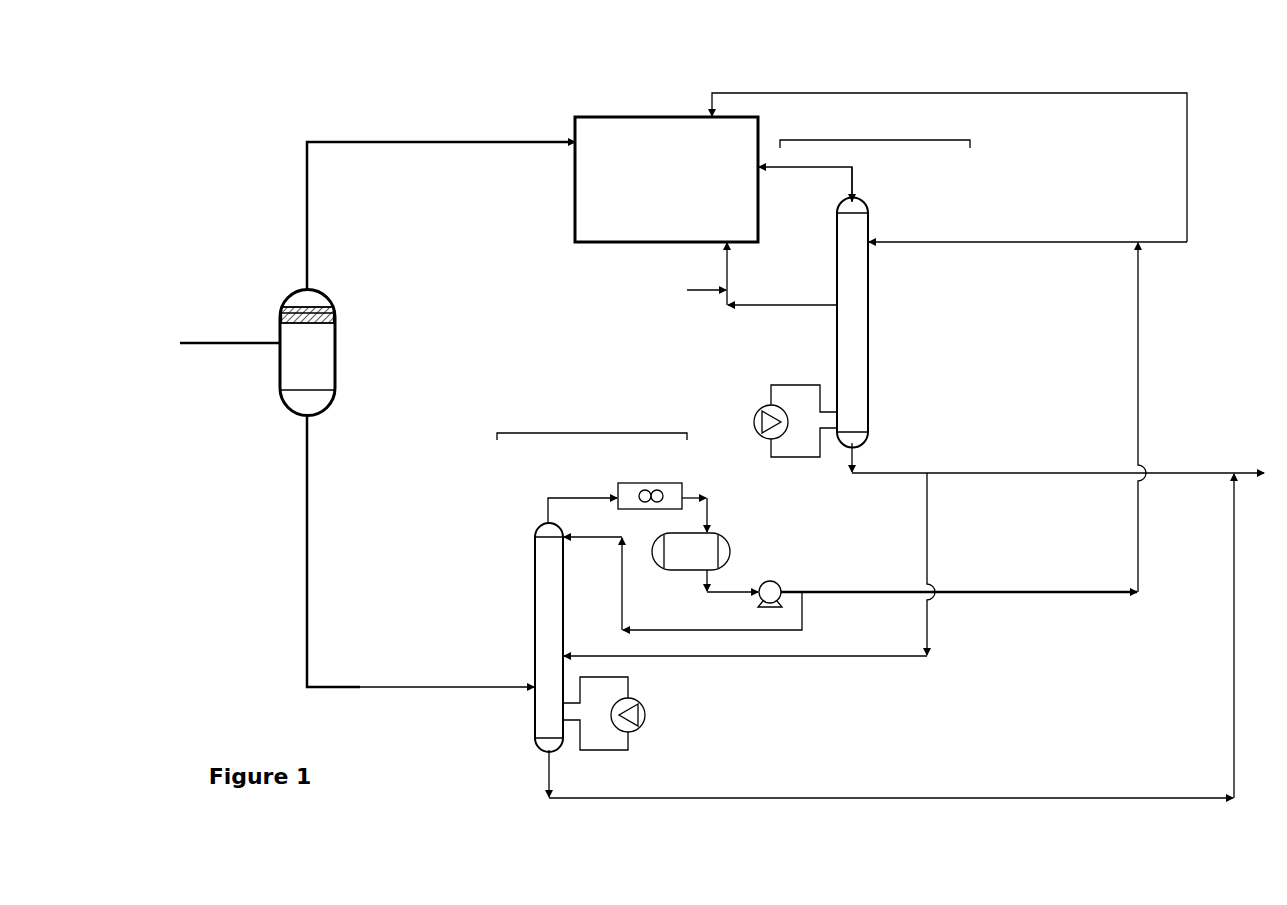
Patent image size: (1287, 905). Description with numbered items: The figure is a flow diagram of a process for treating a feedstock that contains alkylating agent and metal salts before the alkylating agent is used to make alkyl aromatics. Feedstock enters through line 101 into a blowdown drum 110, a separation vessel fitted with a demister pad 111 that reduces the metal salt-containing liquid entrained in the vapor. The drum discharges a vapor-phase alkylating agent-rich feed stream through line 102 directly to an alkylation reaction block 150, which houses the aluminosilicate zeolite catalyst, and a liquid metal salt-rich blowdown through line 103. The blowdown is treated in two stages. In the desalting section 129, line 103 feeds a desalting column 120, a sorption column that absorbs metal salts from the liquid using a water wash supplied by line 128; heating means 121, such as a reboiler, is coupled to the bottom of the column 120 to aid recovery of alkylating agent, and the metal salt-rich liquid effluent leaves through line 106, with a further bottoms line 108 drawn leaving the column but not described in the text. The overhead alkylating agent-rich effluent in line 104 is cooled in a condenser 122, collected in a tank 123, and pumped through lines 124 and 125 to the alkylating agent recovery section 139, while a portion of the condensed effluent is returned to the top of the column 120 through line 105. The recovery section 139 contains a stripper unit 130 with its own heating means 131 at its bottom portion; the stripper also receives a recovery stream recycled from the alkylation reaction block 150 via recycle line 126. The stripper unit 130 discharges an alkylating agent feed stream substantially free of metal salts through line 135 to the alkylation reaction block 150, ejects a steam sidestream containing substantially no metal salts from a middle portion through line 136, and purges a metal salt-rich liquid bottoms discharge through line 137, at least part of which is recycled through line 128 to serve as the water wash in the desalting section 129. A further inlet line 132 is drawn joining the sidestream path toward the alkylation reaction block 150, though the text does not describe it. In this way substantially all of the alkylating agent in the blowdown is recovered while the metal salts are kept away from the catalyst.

The feedstock line 101 is at (230, 333).
The alkylating agent-rich feed stream line 102 is at (441, 216).
The blowdown line 103 is at (420, 551).
The alkylating agent-rich effluent line 104 is at (582, 502).
The recycle line 105 is at (683, 583).
The metal salt-rich liquid effluent line 106 is at (1247, 636).
The bottoms stream 108 is at (891, 774).
The blowdown drum 110 is at (336, 294).
The demister pad 111 is at (282, 318).
The desalting column 120 is at (540, 586).
The heating means 121 is at (646, 712).
The condenser 122 is at (687, 496).
The tank 123 is at (713, 549).
The pumped effluent line 124 is at (962, 425).
The effluent delivery line 125 is at (1028, 232).
The recycle line 126 is at (949, 157).
The water wash line 128 is at (761, 564).
The desalting section 129 is at (580, 433).
The stripper unit 130 is at (863, 226).
The heating means 131 is at (764, 411).
The olefin feed stream 132 is at (706, 282).
The alkylating agent feed stream line 135 is at (805, 176).
The sidestream line 136 is at (782, 274).
The stripper bottoms line 137 is at (1058, 458).
The alkylating agent recovery section 139 is at (862, 140).
The alkylation reaction block 150 is at (619, 130).